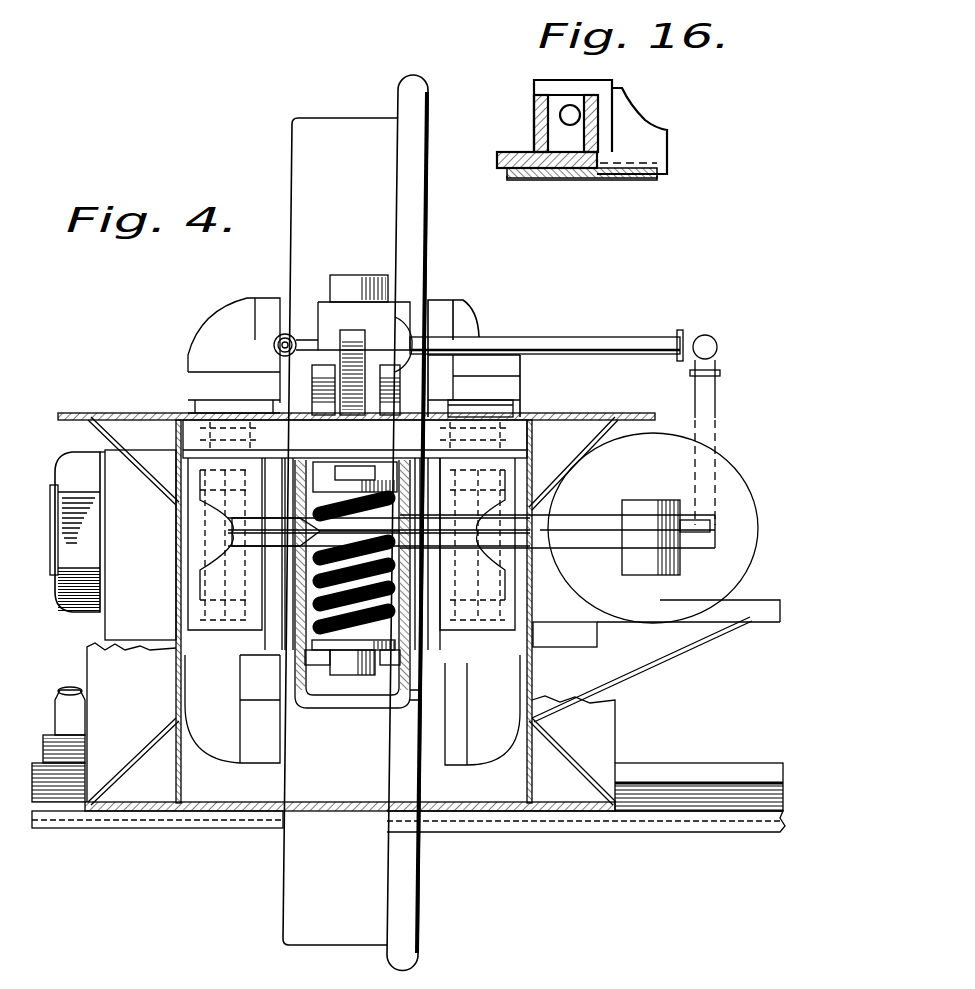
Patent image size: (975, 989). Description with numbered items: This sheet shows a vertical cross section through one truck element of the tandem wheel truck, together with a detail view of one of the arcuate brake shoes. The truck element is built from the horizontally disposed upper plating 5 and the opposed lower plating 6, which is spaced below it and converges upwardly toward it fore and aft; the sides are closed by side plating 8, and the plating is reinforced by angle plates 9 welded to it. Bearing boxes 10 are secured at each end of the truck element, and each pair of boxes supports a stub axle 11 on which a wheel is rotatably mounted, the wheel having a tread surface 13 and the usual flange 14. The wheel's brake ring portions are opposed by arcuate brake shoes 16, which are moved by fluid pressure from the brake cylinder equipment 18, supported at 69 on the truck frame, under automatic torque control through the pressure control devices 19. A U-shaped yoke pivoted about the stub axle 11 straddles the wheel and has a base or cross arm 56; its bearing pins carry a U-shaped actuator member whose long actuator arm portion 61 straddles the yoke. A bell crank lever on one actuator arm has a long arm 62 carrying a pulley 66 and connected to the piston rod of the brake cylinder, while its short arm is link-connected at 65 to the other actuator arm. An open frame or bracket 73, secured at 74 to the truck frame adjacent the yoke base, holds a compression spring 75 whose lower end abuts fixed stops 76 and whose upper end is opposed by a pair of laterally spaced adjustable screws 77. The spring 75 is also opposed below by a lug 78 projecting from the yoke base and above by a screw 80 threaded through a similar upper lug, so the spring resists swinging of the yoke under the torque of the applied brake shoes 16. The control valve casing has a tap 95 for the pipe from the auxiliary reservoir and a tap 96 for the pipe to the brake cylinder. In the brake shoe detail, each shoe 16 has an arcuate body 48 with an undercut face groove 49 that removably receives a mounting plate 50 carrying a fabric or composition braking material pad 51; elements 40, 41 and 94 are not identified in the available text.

In FIG. 4, the upper plating 5 is at (140, 413).
In FIG. 4, the lower plating 6 is at (545, 812).
In FIG. 4, the side plating 8 is at (176, 773).
In FIG. 4, the angle plates 9 is at (100, 426).
In FIG. 4, the bearing boxes 10 is at (140, 545).
In FIG. 4, the stub axle 11 is at (52, 492).
In FIG. 4, the tread surface 13 is at (346, 113).
In FIG. 4, the flange 14 is at (414, 92).
In FIG. 4, the arcuate brake shoes 16 is at (220, 745).
In FIG. 4, the brake cylinder equipments 18 is at (732, 488).
In FIG. 4, the pressure control devices 19 is at (362, 300).
In FIG. 4, the base 40 is at (63, 822).
In FIG. 4, the nut 41 is at (72, 693).
In FIG. 16, the arcuate body 48 is at (540, 154).
In FIG. 16, the undercut face groove 49 is at (605, 152).
In FIG. 16, the mounting plate 50 is at (545, 180).
In FIG. 16, the braking material pad 51 is at (580, 180).
In FIG. 4, the base or cross arm 56 is at (205, 550).
In FIG. 4, the actuator arm portion 61 is at (230, 497).
In FIG. 4, the long arm 62 is at (575, 520).
In FIG. 4, the link connection 65 is at (268, 540).
In FIG. 4, the pulley 66 is at (712, 548).
In FIG. 4, the brake cylinder support 69 is at (672, 636).
In FIG. 4, the open frame or bracket 73 is at (405, 700).
In FIG. 4, the bracket securing point 74 is at (440, 410).
In FIG. 4, the compression spring 75 is at (352, 662).
In FIG. 4, the fixed stops 76 is at (230, 313).
In FIG. 4, the screws 77 is at (315, 393).
In FIG. 4, the lug 78 is at (300, 665).
In FIG. 4, the screw 80 is at (400, 322).
In FIG. 4, the block 94 is at (355, 439).
In FIG. 4, the tap 95 is at (306, 340).
In FIG. 4, the tap 96 is at (506, 346).